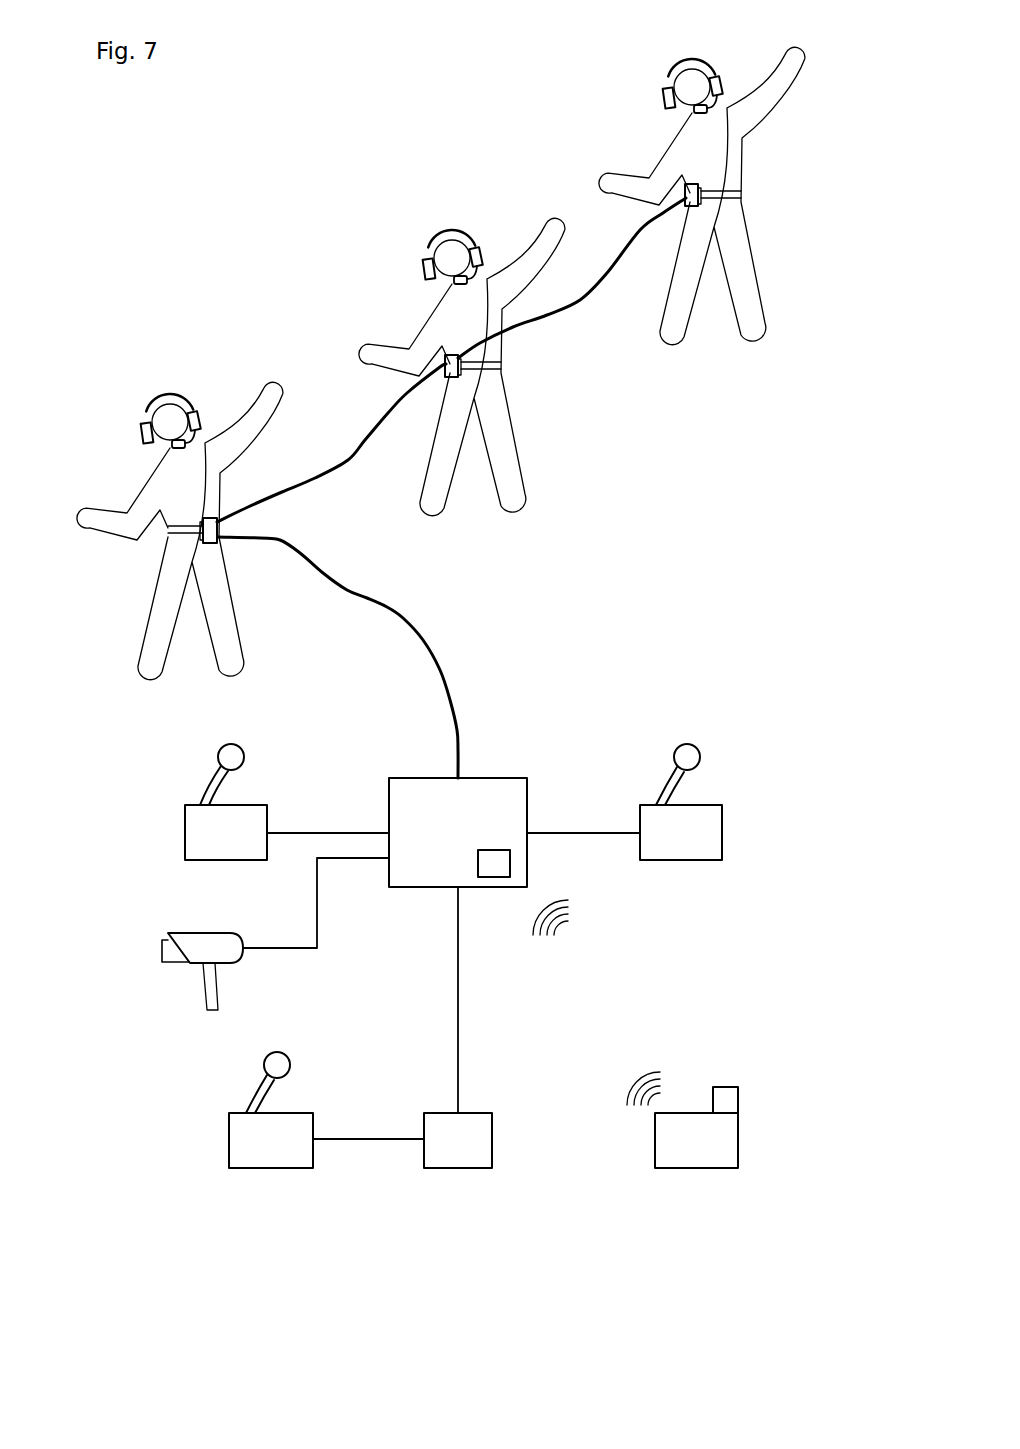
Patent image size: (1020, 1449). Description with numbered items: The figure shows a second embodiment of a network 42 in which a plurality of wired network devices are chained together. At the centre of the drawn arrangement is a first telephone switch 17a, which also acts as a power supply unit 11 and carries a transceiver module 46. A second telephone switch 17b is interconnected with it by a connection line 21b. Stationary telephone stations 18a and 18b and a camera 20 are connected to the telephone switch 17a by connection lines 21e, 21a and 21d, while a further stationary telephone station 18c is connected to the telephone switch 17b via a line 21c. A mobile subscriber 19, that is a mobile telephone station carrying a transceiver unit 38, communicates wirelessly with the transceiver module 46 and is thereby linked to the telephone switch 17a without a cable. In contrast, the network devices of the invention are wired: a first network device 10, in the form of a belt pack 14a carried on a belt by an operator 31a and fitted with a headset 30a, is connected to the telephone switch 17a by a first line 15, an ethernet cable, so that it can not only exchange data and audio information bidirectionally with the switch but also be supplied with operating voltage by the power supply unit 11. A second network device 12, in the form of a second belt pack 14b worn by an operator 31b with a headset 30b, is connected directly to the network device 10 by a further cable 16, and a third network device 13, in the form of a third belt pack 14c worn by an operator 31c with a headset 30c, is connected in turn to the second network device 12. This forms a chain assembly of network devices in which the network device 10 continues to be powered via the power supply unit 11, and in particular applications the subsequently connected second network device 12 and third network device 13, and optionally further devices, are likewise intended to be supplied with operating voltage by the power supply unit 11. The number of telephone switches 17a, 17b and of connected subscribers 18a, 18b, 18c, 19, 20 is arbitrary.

The network device 10 is at (217, 522).
The power supply unit 11 is at (515, 738).
The second network device 12 is at (445, 377).
The third network device 13 is at (683, 193).
The belt pack 14a is at (217, 542).
The second belt pack 14b is at (460, 368).
The third belt pack 14c is at (683, 202).
The first line 15 is at (398, 615).
The further cable 16 is at (366, 437).
The first telephone switch 17a is at (503, 797).
The second telephone switch 17b is at (472, 1153).
The stationary telephone station 18a is at (235, 820).
The stationary telephone station 18b is at (698, 816).
The stationary telephone station 18c is at (285, 1153).
The mobile subscriber 19 is at (675, 1152).
The camera 20 is at (202, 951).
The connection line 21a is at (583, 830).
The connection line 21b is at (460, 997).
The line 21c is at (368, 1140).
The connection line 21d is at (352, 858).
The connection line 21e is at (313, 830).
The headset 30a is at (172, 396).
The headset 30b is at (452, 230).
The headset 30c is at (691, 59).
The operator 31a is at (163, 599).
The operator 31b is at (453, 316).
The operator 31c is at (752, 110).
The transceiver unit 38 is at (727, 1097).
The network 42 is at (398, 1258).
The transceiver module 46 is at (498, 862).